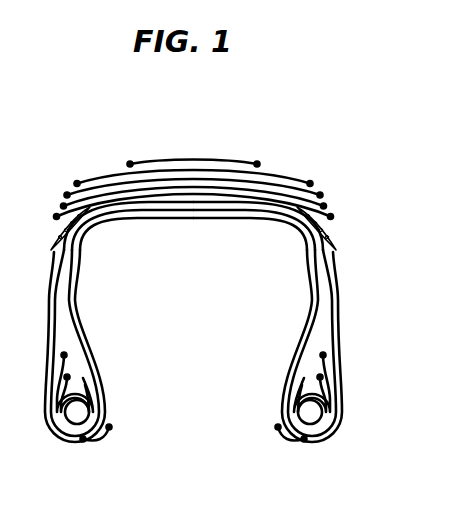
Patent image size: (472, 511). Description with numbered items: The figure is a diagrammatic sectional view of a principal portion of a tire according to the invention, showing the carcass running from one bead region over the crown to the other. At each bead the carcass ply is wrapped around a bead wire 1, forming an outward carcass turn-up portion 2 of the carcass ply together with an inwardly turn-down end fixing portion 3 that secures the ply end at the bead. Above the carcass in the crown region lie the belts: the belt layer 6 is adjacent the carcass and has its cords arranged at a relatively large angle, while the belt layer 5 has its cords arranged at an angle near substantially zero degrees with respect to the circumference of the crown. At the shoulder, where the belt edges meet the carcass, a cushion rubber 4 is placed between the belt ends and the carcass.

The bead wire 1 is at (313, 417).
The outward carcass turn-up portion 2 is at (325, 362).
The inwardly turn-down end fixing portion 3 is at (338, 402).
The cushion rubber 4 is at (335, 235).
The belt layer 5 is at (331, 216).
The belt layer 6 is at (325, 204).